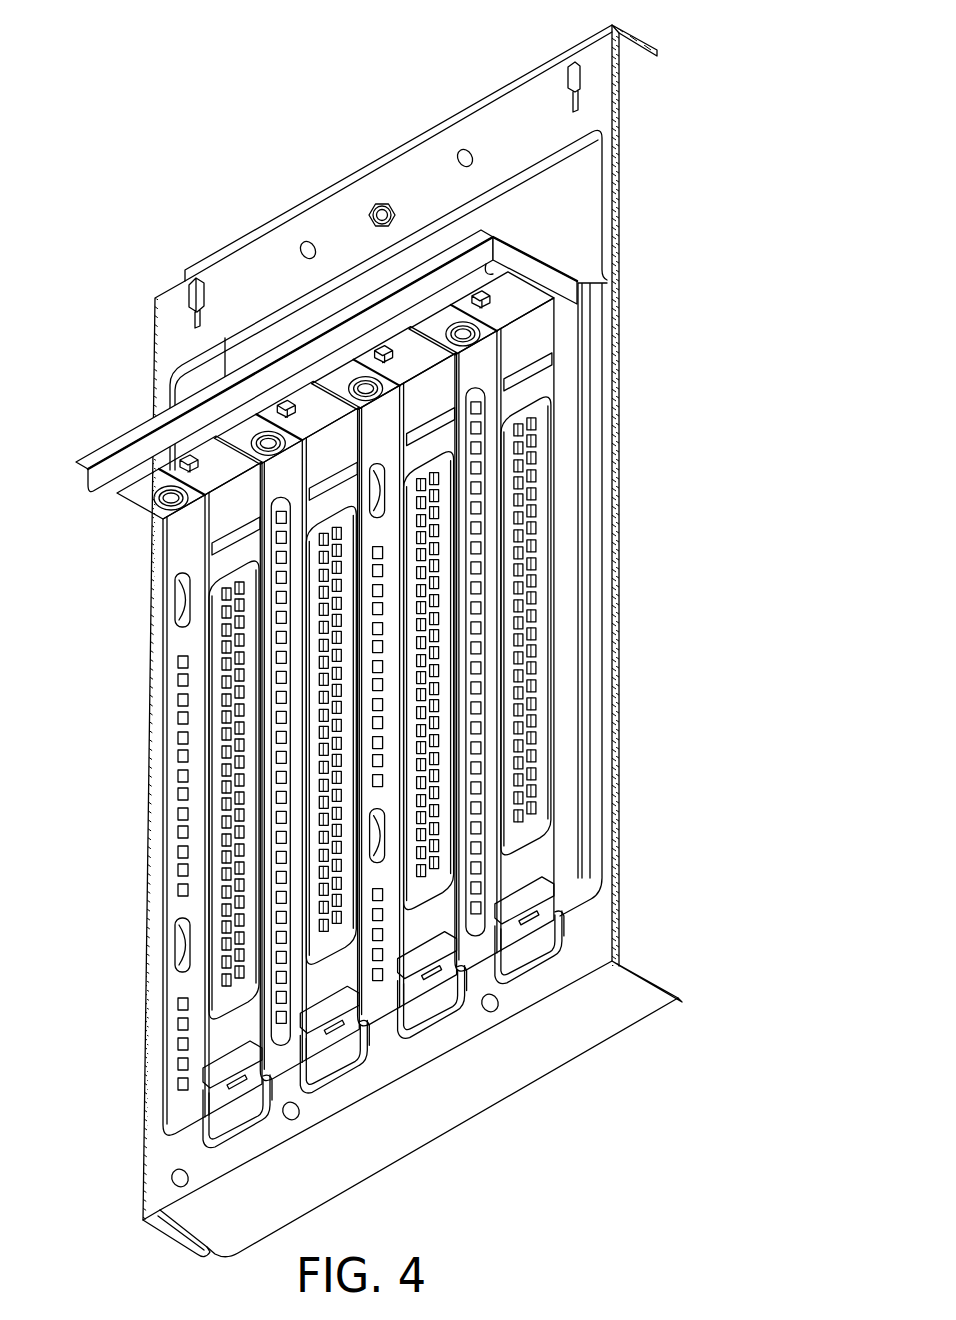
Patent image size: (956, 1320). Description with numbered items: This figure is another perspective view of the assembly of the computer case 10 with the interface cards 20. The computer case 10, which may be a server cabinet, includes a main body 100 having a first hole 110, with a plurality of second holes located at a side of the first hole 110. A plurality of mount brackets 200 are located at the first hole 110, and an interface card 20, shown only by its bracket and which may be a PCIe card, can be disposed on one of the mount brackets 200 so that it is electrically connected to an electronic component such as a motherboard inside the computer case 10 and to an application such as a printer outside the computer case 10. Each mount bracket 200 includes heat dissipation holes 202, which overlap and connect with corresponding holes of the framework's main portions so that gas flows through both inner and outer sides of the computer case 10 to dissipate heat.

The computer case 10 is at (376, 641).
The main body 100 is at (385, 641).
The first hole 110 is at (586, 217).
The mount bracket 200 is at (180, 792).
The heat dissipation holes 202 is at (186, 697).
The interface card 20 is at (542, 582).